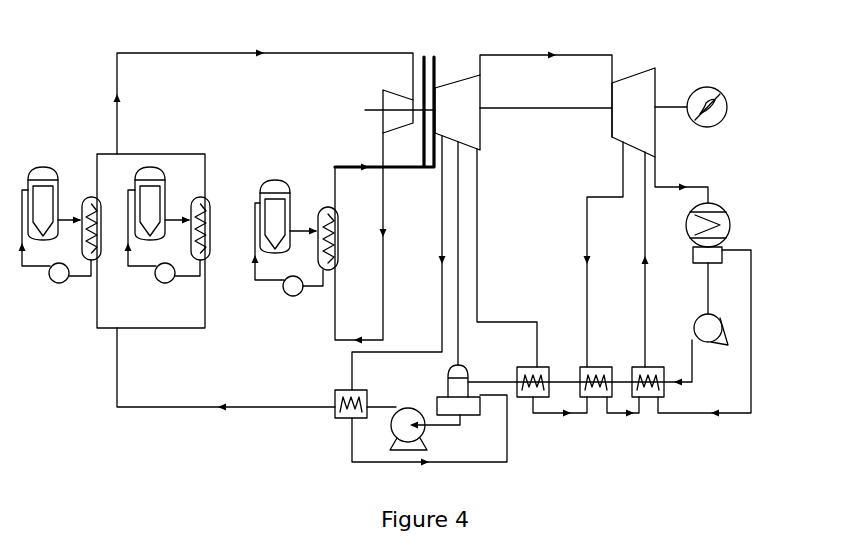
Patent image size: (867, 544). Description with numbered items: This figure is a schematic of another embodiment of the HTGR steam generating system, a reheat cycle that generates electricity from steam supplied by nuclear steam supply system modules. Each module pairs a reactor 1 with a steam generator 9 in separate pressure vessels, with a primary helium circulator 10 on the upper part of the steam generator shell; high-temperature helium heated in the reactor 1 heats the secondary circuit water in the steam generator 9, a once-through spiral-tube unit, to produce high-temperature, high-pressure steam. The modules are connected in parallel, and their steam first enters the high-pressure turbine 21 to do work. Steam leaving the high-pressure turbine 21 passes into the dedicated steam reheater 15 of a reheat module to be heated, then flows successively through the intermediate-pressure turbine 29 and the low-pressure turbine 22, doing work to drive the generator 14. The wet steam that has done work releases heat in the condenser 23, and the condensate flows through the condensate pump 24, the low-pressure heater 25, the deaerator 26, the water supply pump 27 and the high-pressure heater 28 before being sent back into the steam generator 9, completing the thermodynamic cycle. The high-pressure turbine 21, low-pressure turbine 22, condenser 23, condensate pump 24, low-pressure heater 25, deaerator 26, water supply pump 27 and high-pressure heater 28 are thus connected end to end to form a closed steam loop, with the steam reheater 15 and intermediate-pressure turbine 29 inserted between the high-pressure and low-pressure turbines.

The reactor 1 is at (44, 167).
The steam generator 9 is at (92, 200).
The primary helium circulator 10 is at (54, 283).
The generator 14 is at (700, 87).
The steam reheater 15 is at (338, 255).
The high-pressure turbine 21 is at (400, 96).
The low-pressure turbine 22 is at (640, 80).
The condenser 23 is at (730, 228).
The condensate pump 24 is at (706, 322).
The low-pressure heater 25 is at (522, 399).
The deaerator 26 is at (465, 365).
The water supply pump 27 is at (424, 436).
The high-pressure heater 28 is at (338, 417).
The intermediate-pressure turbine 29 is at (460, 83).